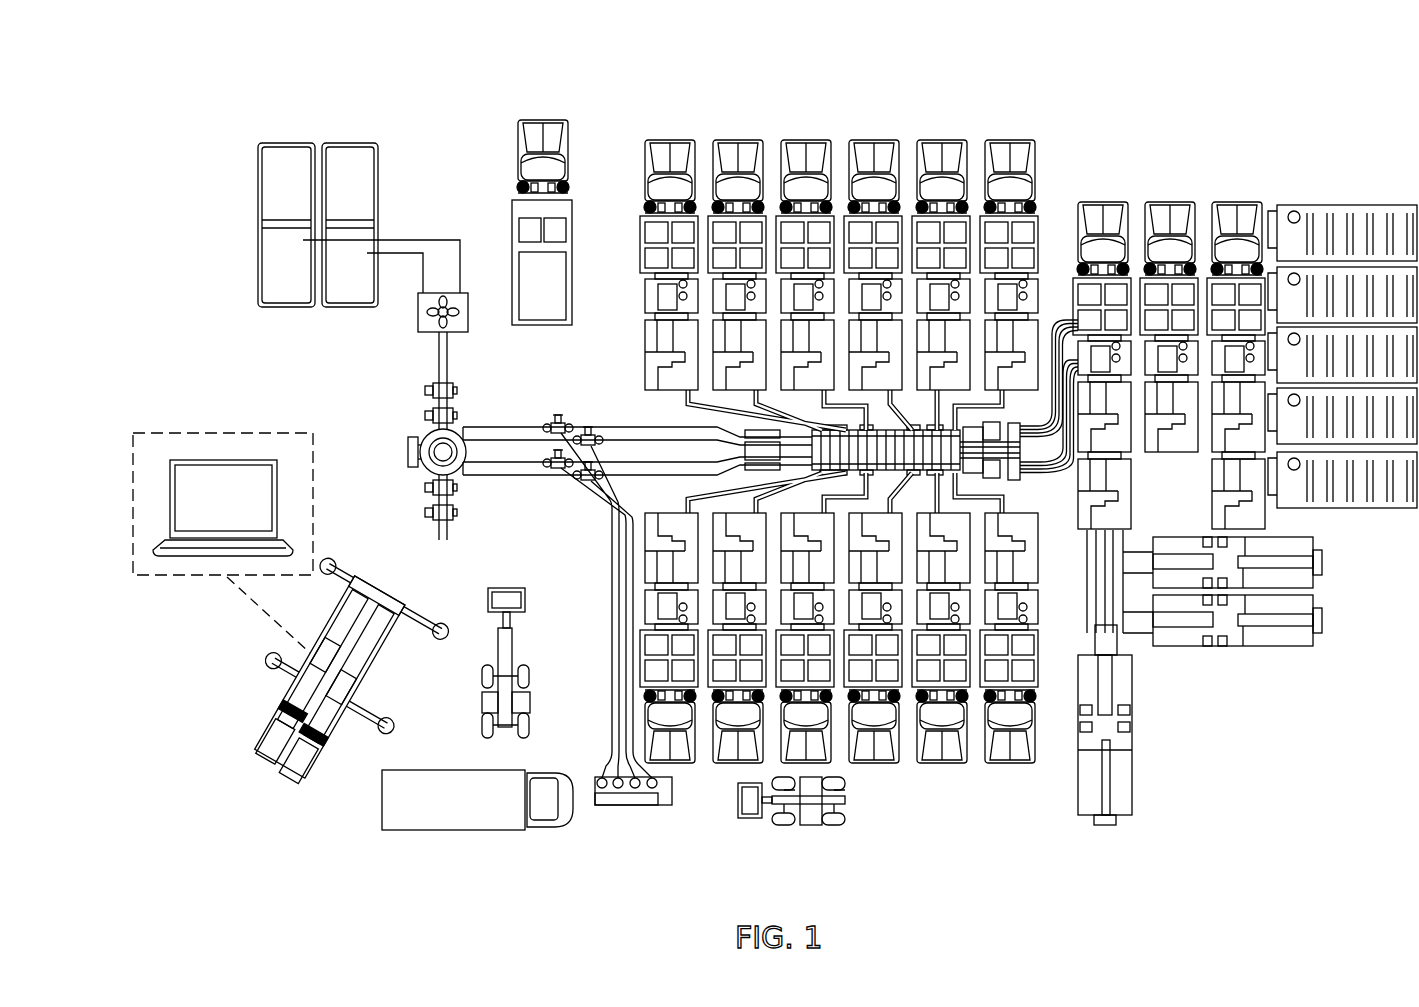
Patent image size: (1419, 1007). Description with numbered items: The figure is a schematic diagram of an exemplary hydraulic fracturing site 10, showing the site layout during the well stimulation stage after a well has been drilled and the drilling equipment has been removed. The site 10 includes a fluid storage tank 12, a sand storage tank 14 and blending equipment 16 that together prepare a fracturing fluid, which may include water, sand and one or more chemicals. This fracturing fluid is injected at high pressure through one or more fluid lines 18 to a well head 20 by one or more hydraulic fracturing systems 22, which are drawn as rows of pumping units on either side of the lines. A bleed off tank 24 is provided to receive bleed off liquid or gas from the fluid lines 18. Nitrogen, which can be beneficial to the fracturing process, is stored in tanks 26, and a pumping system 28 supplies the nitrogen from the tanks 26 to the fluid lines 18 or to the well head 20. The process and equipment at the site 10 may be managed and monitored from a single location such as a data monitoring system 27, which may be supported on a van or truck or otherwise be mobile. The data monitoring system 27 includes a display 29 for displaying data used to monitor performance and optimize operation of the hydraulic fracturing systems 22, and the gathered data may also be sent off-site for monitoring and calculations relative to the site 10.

The hydraulic fracturing site 10 is at (1244, 94).
The fluid storage tank 12 is at (1253, 671).
The sand storage tank 14 is at (1386, 511).
The blending equipment 16 is at (1100, 175).
The fluid lines 18 is at (601, 398).
The well head 20 is at (396, 420).
The hydraulic fracturing systems 22 is at (1030, 118).
The bleed off tank 24 is at (481, 858).
The tanks 26 is at (289, 114).
The data monitoring system 27 is at (264, 697).
The pumping system 28 is at (406, 320).
The display 29 is at (163, 458).